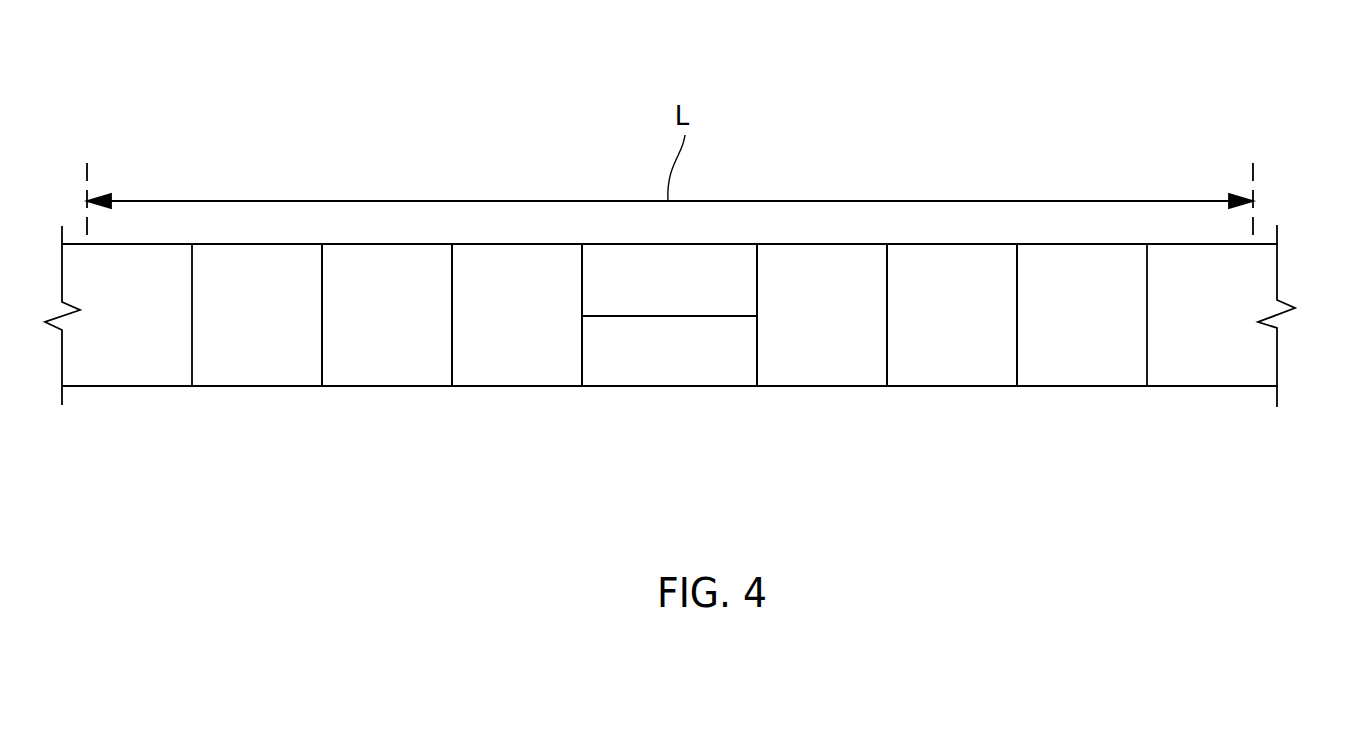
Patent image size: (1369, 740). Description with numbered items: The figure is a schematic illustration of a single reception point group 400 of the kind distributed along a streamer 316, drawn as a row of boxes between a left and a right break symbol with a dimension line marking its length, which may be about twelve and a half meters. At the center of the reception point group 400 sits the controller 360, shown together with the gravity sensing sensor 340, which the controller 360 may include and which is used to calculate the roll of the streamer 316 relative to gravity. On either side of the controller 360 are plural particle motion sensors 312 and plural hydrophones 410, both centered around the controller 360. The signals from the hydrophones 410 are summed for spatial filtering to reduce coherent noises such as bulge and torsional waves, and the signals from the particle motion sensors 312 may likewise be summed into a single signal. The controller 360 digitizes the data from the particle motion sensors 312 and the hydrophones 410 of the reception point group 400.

The reception point group 400 is at (702, 301).
The particle motion sensor 312 is at (235, 329).
The hydrophone 410 is at (364, 329).
The controller 360 is at (648, 292).
The gravity sensing sensor 340 is at (648, 364).
The streamer 316 is at (1209, 402).